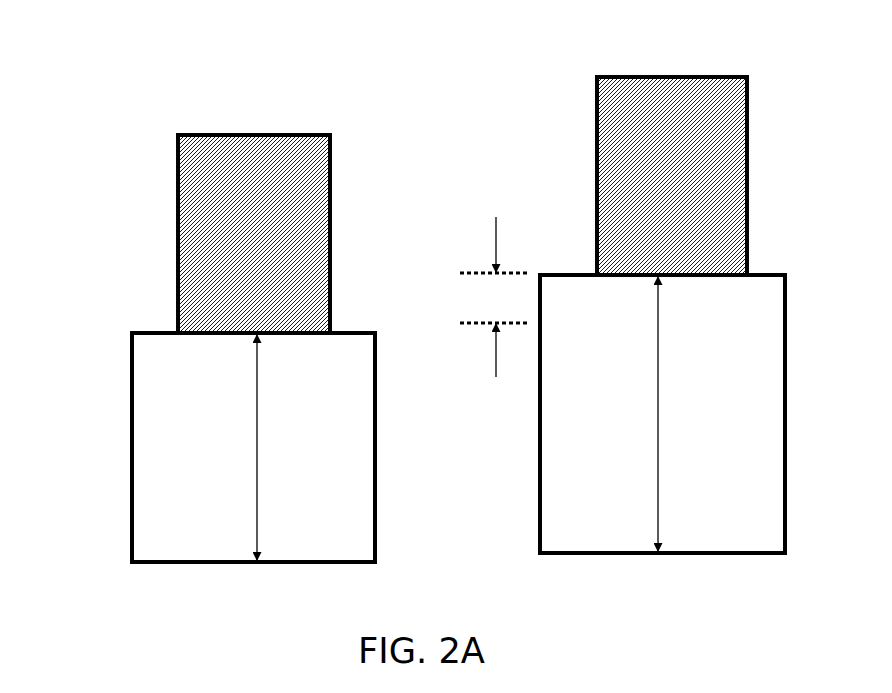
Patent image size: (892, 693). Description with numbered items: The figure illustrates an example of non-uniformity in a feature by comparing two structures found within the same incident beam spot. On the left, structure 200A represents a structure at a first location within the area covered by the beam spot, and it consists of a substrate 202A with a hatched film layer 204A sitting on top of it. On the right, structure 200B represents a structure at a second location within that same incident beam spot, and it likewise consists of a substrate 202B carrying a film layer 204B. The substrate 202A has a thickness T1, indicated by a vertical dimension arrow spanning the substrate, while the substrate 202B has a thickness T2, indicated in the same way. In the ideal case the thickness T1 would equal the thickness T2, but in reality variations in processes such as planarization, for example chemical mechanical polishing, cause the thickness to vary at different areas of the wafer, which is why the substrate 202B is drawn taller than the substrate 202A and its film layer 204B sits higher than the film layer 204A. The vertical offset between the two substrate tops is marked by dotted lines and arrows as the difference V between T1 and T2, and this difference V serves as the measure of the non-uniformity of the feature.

The structure 200A is at (148, 73).
The substrate 202A is at (155, 531).
The film layer 204A is at (192, 235).
The thickness T1 is at (256, 494).
The structure 200B is at (513, 84).
The substrate 202B is at (555, 536).
The film layer 204B is at (622, 190).
The thickness T2 is at (657, 484).
The difference V is at (496, 235).